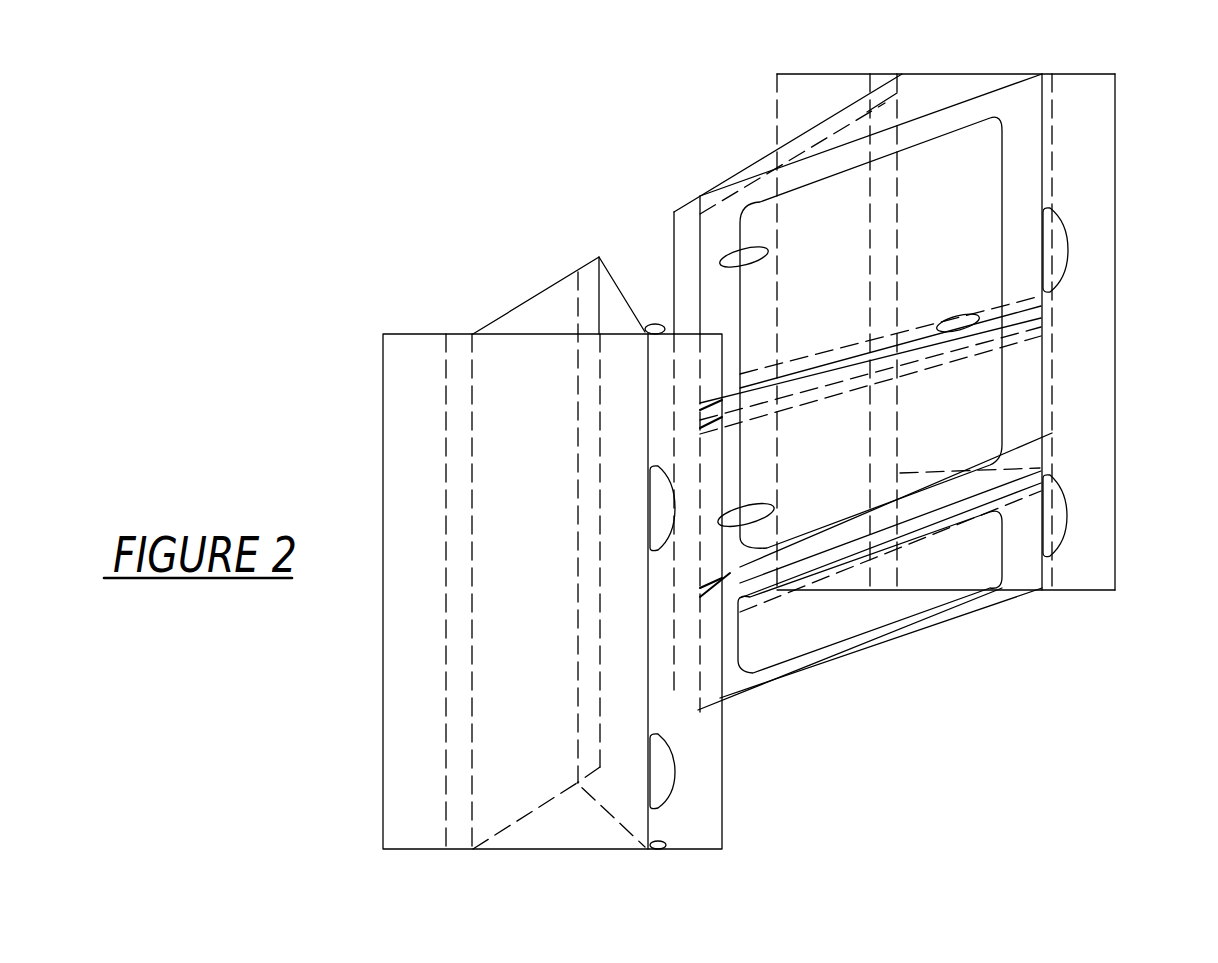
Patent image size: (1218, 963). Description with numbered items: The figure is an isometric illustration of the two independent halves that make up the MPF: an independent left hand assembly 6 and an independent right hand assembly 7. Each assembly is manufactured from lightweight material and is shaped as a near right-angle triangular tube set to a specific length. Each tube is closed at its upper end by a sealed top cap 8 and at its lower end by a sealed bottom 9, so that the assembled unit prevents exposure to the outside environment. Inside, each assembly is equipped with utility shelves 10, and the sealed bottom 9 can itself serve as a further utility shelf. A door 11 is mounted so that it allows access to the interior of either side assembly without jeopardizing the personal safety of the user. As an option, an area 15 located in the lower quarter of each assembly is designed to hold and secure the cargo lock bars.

The left hand assembly 6 is at (578, 910).
The right hand assembly 7 is at (1013, 671).
The sealed top cap 8 is at (851, 119).
The sealed bottom 9 is at (955, 494).
The utility shelves 10 is at (953, 376).
The door 11 is at (960, 332).
The cargo lock bar holding area 15 is at (889, 671).